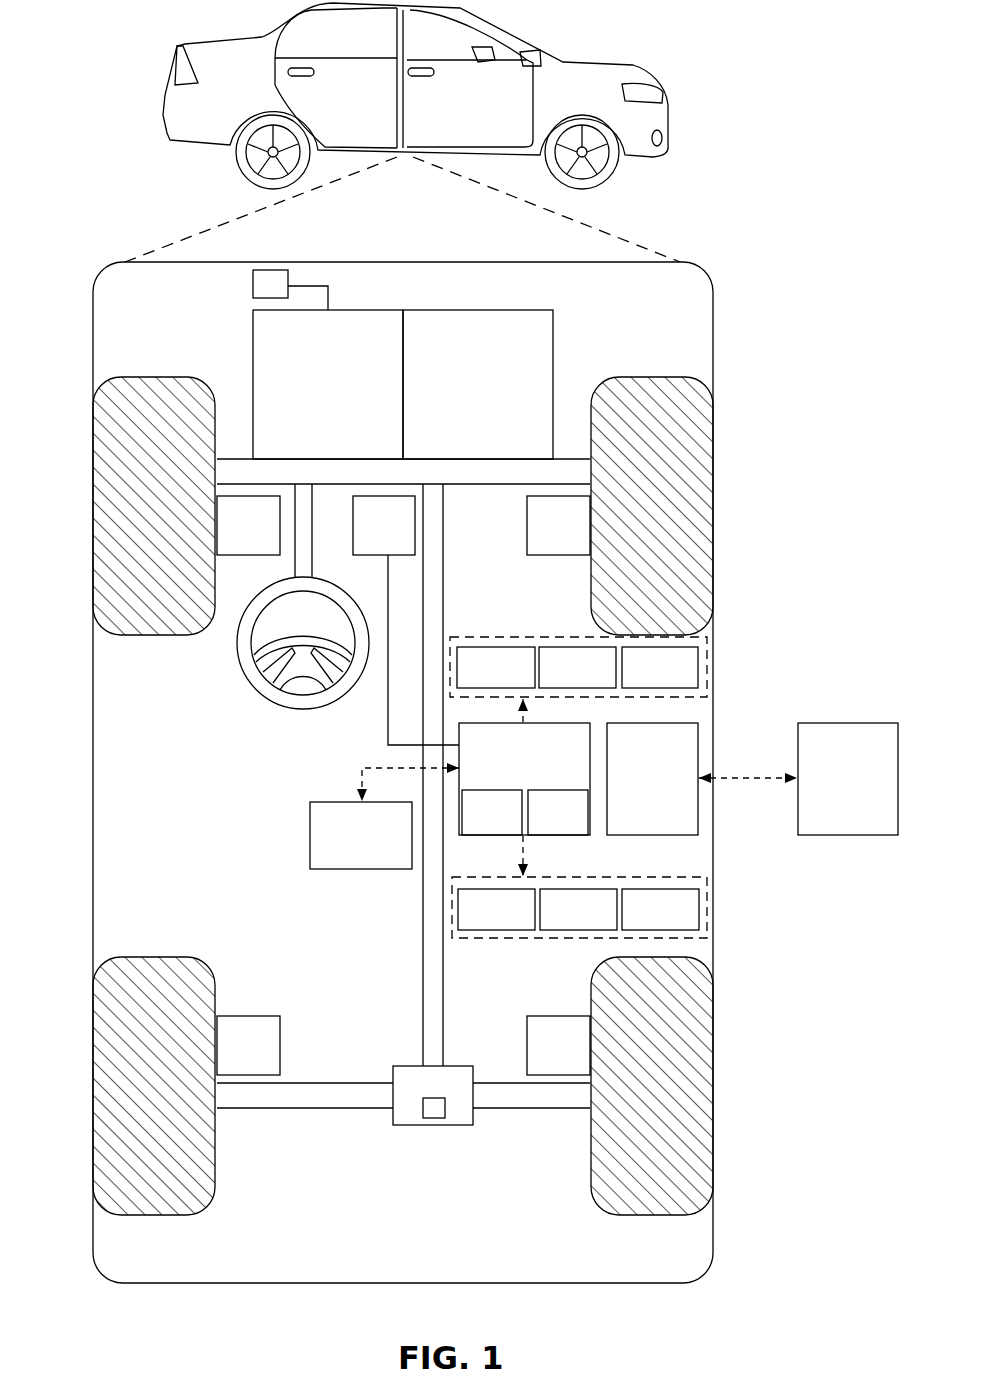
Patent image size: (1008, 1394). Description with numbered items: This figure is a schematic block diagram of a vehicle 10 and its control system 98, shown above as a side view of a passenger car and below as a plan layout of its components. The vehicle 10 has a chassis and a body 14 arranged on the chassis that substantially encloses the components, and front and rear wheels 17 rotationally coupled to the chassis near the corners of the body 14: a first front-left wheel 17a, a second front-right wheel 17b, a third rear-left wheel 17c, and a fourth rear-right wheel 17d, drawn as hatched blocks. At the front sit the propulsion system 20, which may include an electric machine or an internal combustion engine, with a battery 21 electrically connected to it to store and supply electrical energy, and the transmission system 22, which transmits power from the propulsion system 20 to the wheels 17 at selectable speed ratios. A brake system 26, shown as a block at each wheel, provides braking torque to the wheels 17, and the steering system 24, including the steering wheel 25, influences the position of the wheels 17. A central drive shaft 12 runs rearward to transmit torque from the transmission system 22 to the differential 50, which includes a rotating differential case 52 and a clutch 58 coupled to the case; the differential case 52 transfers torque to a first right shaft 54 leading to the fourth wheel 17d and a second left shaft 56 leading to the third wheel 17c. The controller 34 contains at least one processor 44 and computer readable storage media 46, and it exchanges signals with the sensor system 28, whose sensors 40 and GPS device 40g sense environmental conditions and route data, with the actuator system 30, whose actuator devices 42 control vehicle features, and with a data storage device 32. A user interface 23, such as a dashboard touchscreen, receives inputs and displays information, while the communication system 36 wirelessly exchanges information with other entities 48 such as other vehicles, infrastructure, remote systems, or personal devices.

The vehicle 10 is at (180, 80).
The central drive shaft 12 is at (423, 950).
The body 14 is at (93, 733).
The wheels 17 is at (713, 422).
The first wheel 17a is at (160, 377).
The second wheel 17b is at (652, 377).
The third wheel 17c is at (160, 1215).
The fourth wheel 17d is at (650, 1215).
The propulsion system 20 is at (346, 399).
The battery 21 is at (272, 270).
The transmission system 22 is at (496, 399).
The user interface 23 is at (402, 541).
The steering system 24 is at (320, 575).
The steering wheel 25 is at (257, 687).
The brake system 26 is at (266, 541).
The sensor system 28 is at (537, 637).
The actuator system 30 is at (541, 940).
The data storage device 32 is at (379, 851).
The controller 34 is at (542, 773).
The communication system 36 is at (670, 794).
The sensors 40 is at (514, 683).
The GPS device 40g is at (688, 683).
The actuator devices 42 is at (514, 925).
The processor 44 is at (510, 828).
The computer readable storage device or media 46 is at (576, 828).
The other entities 48 is at (866, 794).
The differential 50 is at (397, 1056).
The differential case 52 is at (403, 1125).
The first shaft 54 is at (543, 1108).
The second shaft 56 is at (280, 1108).
The clutch 58 is at (433, 1118).
The control system 98 is at (777, 524).